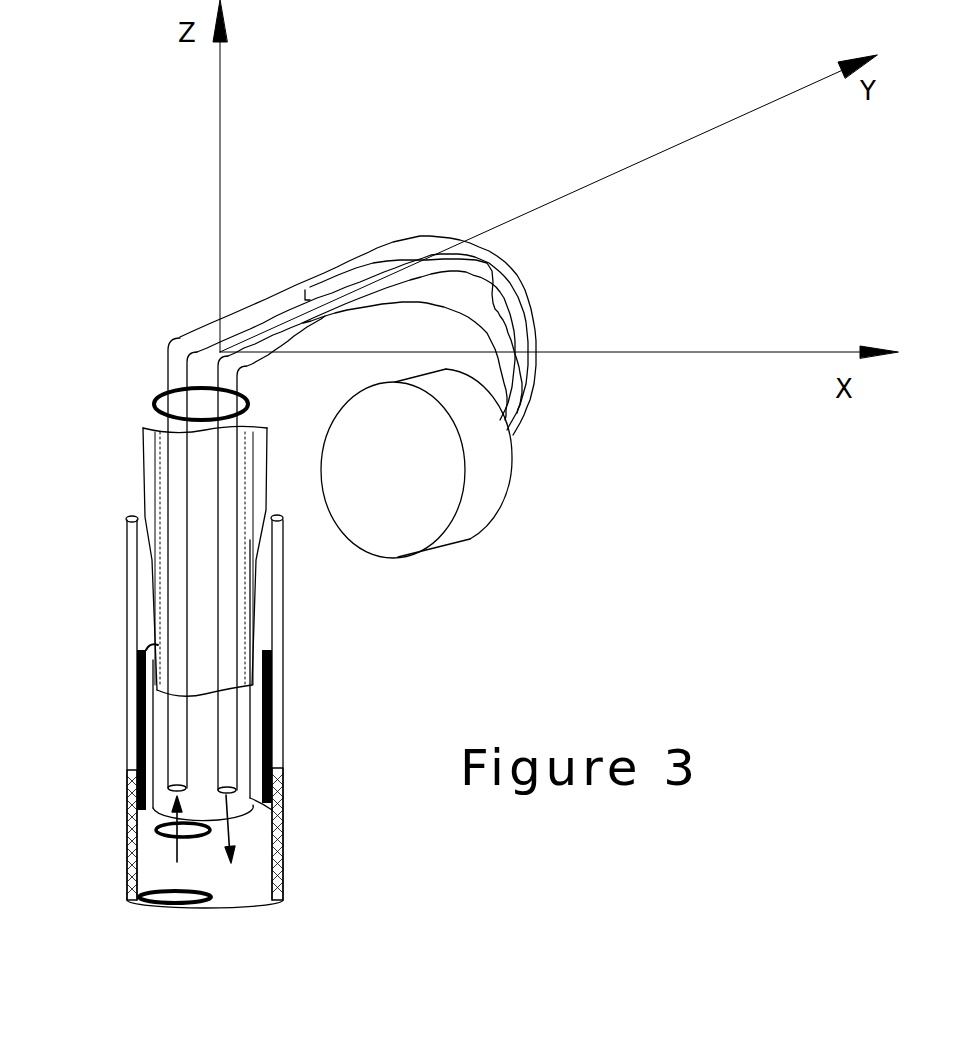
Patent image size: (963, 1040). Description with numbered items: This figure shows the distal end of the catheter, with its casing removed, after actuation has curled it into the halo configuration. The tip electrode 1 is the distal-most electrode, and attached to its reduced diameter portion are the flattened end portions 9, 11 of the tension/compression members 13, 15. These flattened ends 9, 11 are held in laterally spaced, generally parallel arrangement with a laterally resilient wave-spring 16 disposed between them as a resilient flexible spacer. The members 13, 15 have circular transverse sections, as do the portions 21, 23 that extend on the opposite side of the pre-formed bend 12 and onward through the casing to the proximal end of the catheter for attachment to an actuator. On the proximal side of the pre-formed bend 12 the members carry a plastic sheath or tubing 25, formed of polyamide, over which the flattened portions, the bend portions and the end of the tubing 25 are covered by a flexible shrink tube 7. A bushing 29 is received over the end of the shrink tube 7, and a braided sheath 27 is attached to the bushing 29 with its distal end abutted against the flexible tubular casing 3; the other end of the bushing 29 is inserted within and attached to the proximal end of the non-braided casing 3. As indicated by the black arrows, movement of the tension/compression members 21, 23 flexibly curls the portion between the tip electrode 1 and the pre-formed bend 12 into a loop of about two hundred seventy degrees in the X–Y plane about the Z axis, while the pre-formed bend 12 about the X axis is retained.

The tip electrode 1 is at (468, 537).
The flexible tubular casing 3 is at (210, 713).
The flexible shrink tube 7 is at (137, 473).
The flattened end portion 9 is at (406, 294).
The flattened end portion 11 is at (427, 307).
The pre-formed bend 12 is at (212, 533).
The tension/compression member 13 is at (240, 313).
The tension/compression member 15 is at (287, 347).
The wave-spring 16 is at (503, 307).
The tension/compression member portion 21 is at (177, 627).
The tension/compression member portion 23 is at (227, 645).
The plastic sheath or tubing 25 is at (152, 408).
The braided sheath 27 is at (127, 855).
The bushing 29 is at (272, 678).